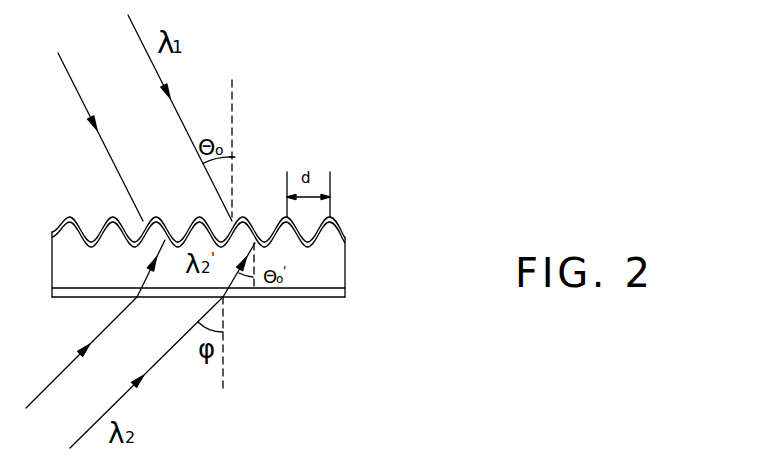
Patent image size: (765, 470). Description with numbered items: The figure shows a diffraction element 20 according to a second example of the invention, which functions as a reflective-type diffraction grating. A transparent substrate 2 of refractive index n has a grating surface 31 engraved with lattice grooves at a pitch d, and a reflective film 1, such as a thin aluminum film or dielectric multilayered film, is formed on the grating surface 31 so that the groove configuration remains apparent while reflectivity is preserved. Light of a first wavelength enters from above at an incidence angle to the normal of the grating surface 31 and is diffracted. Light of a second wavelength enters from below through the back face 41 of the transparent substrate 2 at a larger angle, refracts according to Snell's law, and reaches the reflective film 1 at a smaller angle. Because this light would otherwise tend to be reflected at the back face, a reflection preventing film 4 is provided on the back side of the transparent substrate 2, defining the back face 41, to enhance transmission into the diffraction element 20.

The reflective film 1 is at (342, 225).
The transparent substrate 2 is at (335, 271).
The reflection preventing film 4 is at (335, 293).
The diffraction element 20 is at (432, 225).
The grating surface 31 is at (77, 228).
The back face 41 is at (67, 298).